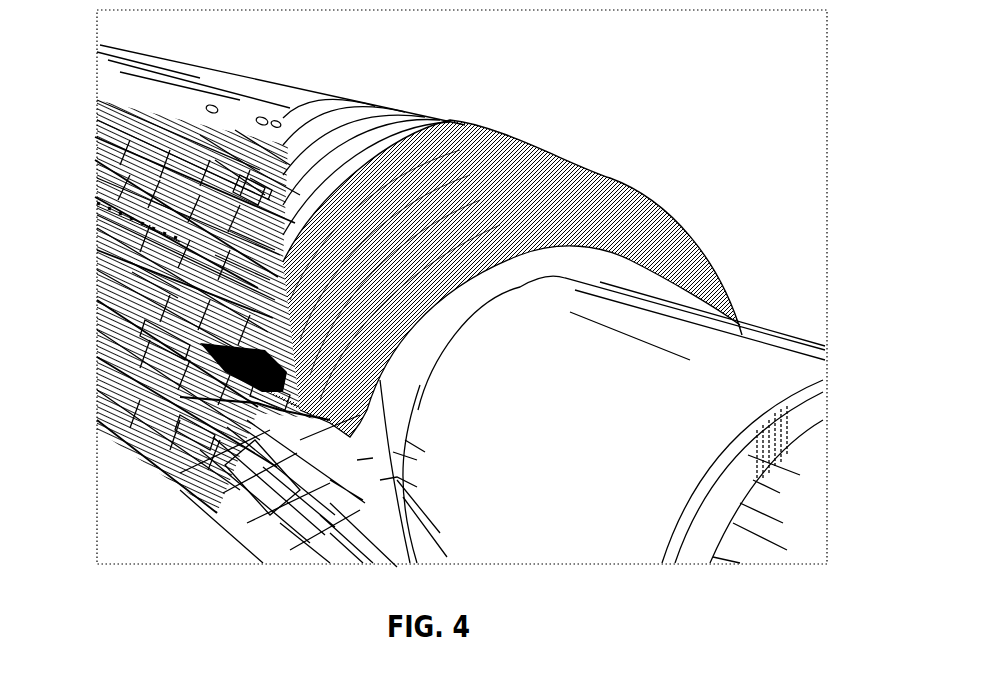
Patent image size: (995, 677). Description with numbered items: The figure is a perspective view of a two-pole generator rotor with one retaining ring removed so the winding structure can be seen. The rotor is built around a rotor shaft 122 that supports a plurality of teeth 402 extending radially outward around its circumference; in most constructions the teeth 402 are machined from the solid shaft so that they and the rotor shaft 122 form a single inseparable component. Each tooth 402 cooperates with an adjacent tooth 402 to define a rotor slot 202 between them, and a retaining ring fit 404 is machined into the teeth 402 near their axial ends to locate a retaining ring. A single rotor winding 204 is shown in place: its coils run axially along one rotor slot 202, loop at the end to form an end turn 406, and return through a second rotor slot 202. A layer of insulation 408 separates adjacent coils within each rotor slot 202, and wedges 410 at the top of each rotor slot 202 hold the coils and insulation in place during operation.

The rotor shaft 122 is at (680, 393).
The rotor slot 202 is at (233, 477).
The rotor winding 204 is at (153, 333).
The tooth 402 is at (205, 428).
The retaining ring fit 404 is at (253, 190).
The end turn 406 is at (263, 393).
The layer of insulation 408 is at (150, 262).
The wedge 410 is at (128, 218).